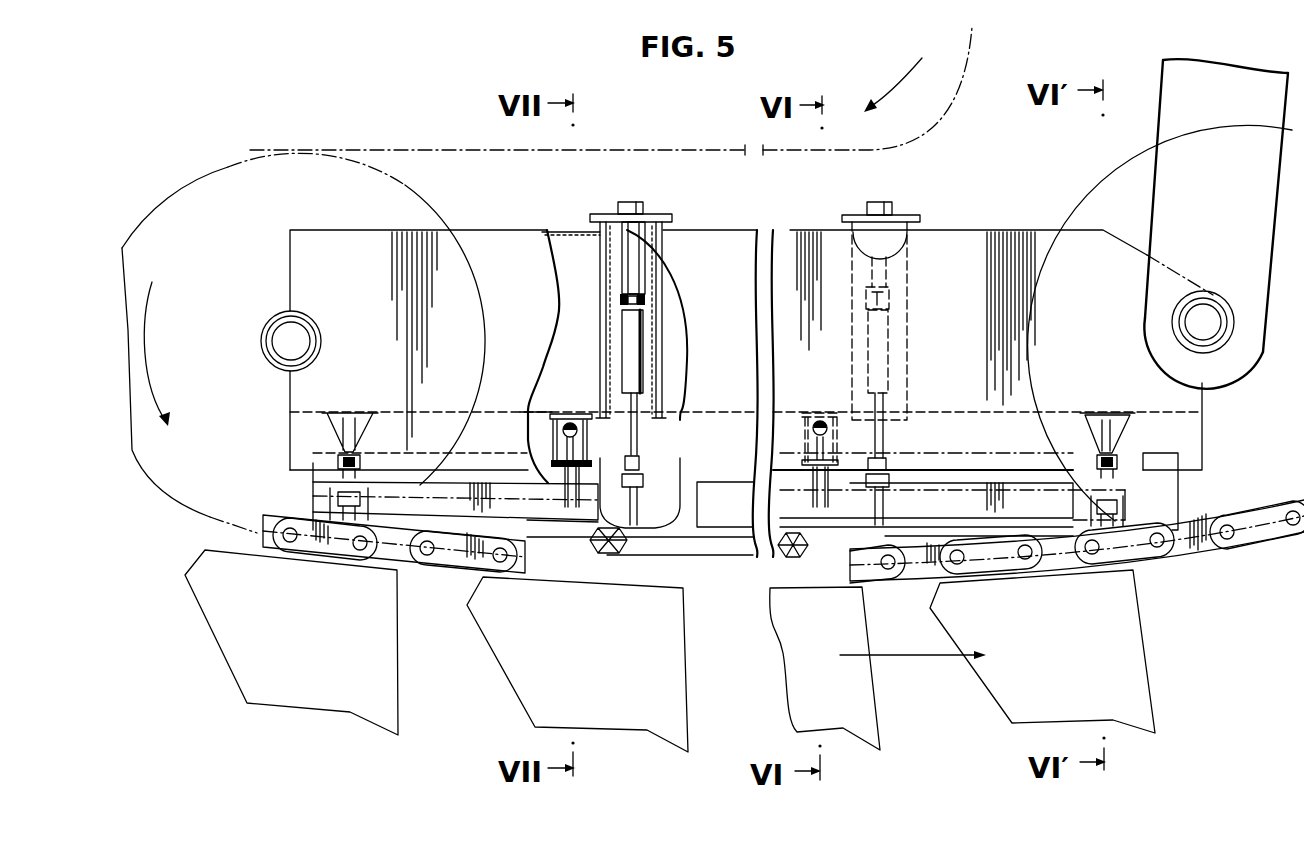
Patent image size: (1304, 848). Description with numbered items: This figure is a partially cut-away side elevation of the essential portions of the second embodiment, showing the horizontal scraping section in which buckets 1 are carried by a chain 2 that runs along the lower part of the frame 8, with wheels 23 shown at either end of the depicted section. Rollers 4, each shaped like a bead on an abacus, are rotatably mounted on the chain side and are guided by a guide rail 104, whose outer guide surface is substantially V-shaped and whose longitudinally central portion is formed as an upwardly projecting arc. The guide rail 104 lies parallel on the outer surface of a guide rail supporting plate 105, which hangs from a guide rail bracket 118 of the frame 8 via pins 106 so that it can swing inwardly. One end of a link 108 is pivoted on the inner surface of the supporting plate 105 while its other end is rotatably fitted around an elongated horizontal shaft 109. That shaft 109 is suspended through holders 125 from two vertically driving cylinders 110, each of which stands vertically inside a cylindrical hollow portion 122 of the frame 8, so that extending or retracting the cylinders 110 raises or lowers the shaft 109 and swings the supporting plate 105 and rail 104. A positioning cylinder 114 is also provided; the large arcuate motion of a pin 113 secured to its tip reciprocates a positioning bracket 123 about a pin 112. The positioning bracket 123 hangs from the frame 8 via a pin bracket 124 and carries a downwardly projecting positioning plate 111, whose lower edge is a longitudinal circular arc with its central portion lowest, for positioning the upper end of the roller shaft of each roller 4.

The bucket 1 is at (337, 697).
The chain 2 is at (440, 150).
The roller 4 is at (593, 557).
The frame 8 is at (716, 240).
The sprocket wheel 23 is at (428, 218).
The guide rail 104 is at (743, 553).
The guide rail supporting plate 105 is at (683, 527).
The pin 106 is at (340, 458).
The link 108 is at (347, 515).
The horizontal shaft 109 is at (658, 510).
The vertically driving cylinder 110 is at (643, 352).
The positioning plate 111 is at (573, 520).
The pin 112 is at (553, 462).
The pin 113 is at (567, 412).
The positioning cylinder 114 is at (587, 458).
The guide rail bracket 118 is at (333, 427).
The cylindrical hollow portion 122 is at (652, 310).
The positioning bracket 123 is at (563, 482).
The pin bracket 124 is at (553, 433).
The holder 125 is at (650, 497).